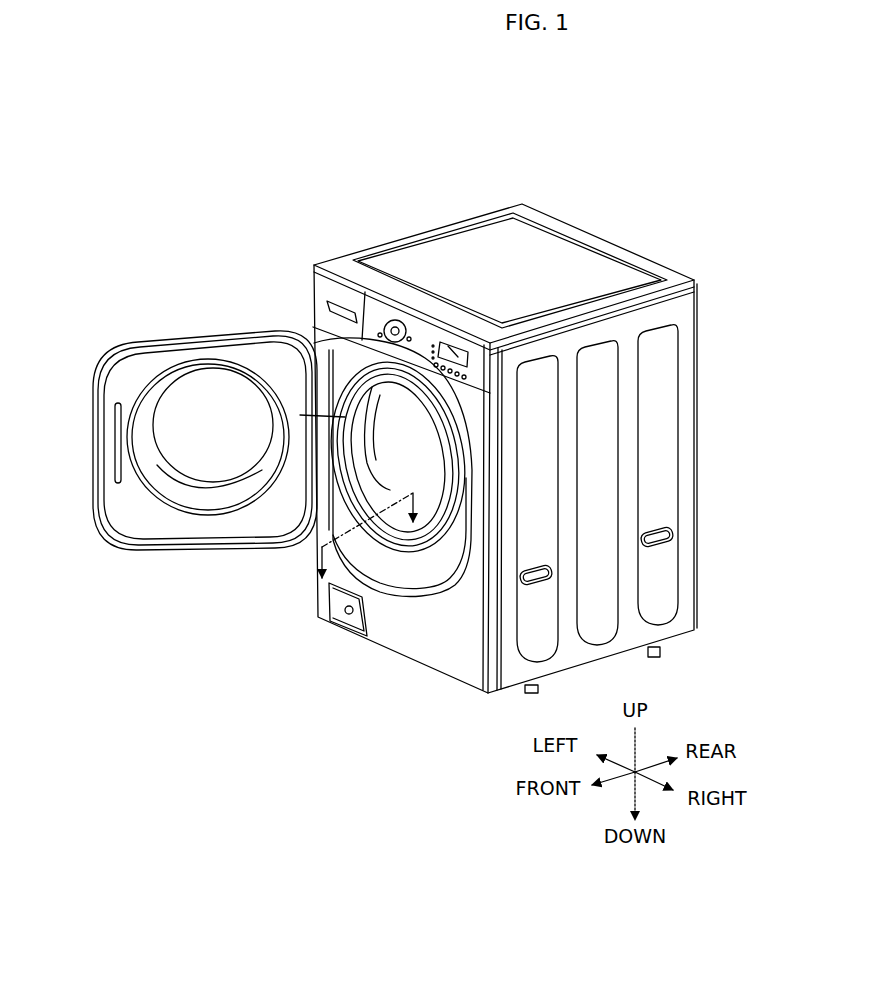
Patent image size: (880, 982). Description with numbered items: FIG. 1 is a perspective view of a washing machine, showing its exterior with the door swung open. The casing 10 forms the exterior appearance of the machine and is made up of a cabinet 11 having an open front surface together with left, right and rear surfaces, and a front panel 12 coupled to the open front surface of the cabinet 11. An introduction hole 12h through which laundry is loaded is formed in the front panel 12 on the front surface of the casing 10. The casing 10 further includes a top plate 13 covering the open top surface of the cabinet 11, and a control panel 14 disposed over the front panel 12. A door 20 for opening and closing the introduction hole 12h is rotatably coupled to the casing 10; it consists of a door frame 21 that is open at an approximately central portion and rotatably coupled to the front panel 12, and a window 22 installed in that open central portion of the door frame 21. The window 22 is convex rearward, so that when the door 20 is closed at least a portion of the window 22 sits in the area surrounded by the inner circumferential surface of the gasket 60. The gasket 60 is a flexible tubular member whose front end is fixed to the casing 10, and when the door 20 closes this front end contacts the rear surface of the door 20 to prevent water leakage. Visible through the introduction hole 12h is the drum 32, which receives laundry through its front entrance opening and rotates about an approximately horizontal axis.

The casing 10 is at (502, 433).
The cabinet 11 is at (570, 405).
The front panel 12 is at (452, 638).
The introduction hole 12h is at (423, 477).
The top plate 13 is at (507, 250).
The control panel 14 is at (438, 343).
The door 20 is at (181, 485).
The door frame 21 is at (93, 497).
The window 22 is at (137, 547).
The drum 32 is at (393, 497).
The gasket 60 is at (300, 416).